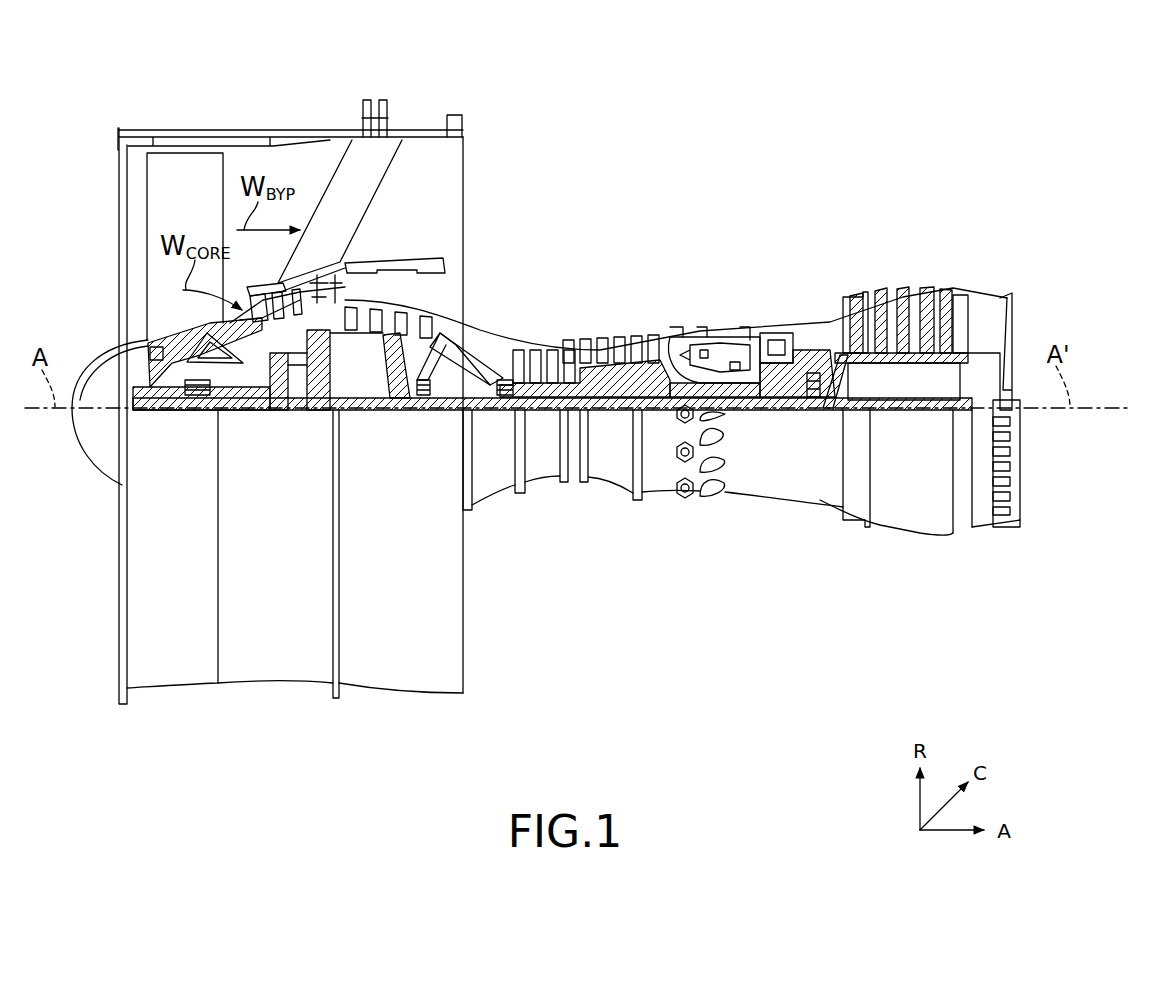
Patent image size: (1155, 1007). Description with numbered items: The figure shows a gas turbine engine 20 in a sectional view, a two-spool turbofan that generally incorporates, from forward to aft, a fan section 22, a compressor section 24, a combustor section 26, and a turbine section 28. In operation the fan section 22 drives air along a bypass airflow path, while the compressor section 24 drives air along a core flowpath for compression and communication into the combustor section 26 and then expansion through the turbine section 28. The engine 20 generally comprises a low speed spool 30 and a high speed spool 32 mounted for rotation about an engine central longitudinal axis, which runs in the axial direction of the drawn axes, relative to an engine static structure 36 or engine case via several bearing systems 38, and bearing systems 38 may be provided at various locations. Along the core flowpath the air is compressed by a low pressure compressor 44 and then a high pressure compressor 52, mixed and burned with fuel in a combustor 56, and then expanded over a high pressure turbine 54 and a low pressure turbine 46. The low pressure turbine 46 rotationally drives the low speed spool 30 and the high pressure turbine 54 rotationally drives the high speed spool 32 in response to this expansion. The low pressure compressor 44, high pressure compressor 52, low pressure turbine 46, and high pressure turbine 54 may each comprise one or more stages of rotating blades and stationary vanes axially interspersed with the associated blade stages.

The gas turbine engine 20 is at (760, 123).
The fan section 22 is at (307, 110).
The compressor section 24 is at (335, 228).
The combustor section 26 is at (672, 228).
The turbine section 28 is at (960, 228).
The low speed spool 30 is at (757, 410).
The high speed spool 32 is at (650, 375).
The engine static structure 36 is at (885, 500).
The bearing systems 38 is at (196, 382).
The low pressure compressor 44 is at (402, 320).
The low pressure turbine 46 is at (903, 304).
The high pressure compressor 52 is at (612, 342).
The high pressure turbine 54 is at (782, 330).
The combustor 56 is at (723, 347).